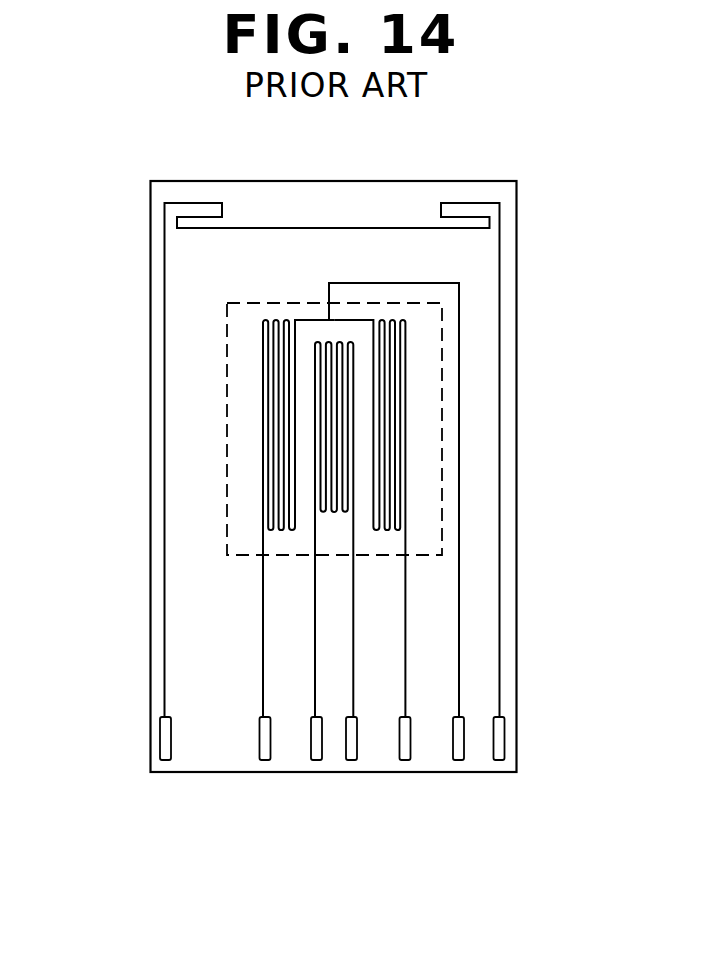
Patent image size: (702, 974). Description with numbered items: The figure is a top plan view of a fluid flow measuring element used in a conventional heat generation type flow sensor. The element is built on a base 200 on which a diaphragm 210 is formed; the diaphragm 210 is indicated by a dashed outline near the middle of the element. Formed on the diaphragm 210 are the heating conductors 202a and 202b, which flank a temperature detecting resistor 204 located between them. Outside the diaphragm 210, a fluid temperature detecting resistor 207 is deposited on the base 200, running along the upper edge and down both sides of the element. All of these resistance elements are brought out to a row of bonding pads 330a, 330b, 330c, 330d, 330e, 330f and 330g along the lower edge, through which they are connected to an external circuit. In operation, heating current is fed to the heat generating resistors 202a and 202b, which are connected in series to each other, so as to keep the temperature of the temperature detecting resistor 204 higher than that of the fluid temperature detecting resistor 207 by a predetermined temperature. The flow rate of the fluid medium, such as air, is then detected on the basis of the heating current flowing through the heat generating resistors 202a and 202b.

The substrate 200 is at (518, 245).
The fluid temperature detecting resistor 207 is at (183, 208).
The diaphragm 210 is at (273, 302).
The heating conductor 202a is at (262, 420).
The heating conductor 202b is at (405, 407).
The temperature detecting resistor 204 is at (328, 343).
The bonding pad 330a is at (163, 760).
The bonding pad 330b is at (265, 760).
The bonding pad 330c is at (316, 760).
The bonding pad 330d is at (351, 760).
The bonding pad 330e is at (403, 760).
The bonding pad 330f is at (458, 760).
The bonding pad 330g is at (497, 760).